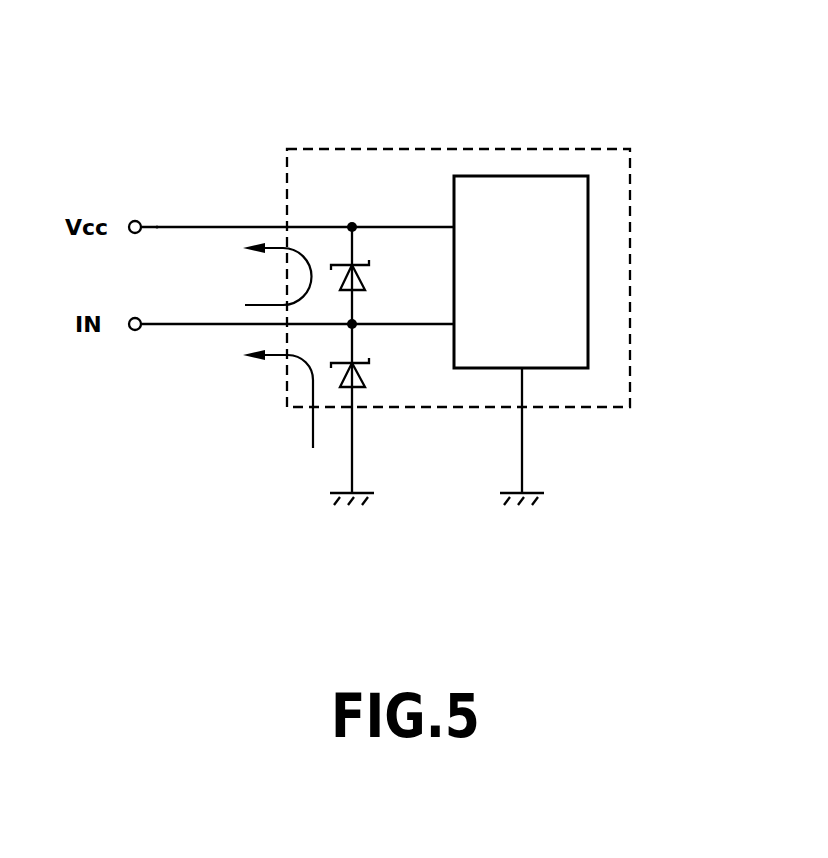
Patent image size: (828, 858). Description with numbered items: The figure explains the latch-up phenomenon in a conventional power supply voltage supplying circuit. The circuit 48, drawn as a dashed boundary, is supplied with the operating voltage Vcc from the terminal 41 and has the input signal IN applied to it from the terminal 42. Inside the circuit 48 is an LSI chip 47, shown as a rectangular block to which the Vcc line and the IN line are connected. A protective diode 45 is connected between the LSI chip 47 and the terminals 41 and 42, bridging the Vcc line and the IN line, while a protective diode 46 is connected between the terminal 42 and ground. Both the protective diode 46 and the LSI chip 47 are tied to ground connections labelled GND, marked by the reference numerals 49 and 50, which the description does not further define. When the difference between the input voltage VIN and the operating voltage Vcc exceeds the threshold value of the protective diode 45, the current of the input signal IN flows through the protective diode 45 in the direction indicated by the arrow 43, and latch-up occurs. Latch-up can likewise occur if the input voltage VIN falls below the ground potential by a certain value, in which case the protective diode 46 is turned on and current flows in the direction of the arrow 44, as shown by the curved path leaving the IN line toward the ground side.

The terminal 41 is at (137, 221).
The terminal 42 is at (135, 331).
The arrow 43 is at (277, 247).
The arrow 44 is at (272, 357).
The protective diode 45 is at (369, 270).
The protective diode 46 is at (369, 370).
The LSI chip 47 is at (588, 237).
The circuit 48 is at (568, 149).
The ground terminal GND 49 is at (348, 558).
The ground terminal GND 50 is at (519, 558).